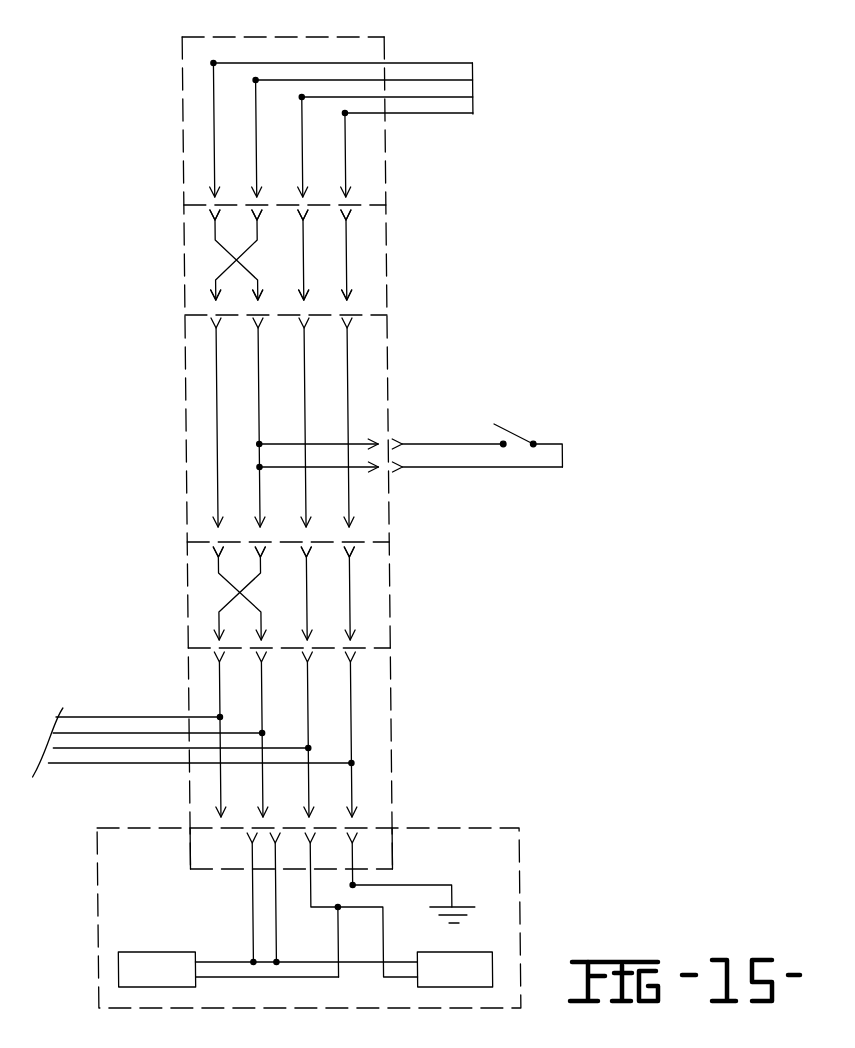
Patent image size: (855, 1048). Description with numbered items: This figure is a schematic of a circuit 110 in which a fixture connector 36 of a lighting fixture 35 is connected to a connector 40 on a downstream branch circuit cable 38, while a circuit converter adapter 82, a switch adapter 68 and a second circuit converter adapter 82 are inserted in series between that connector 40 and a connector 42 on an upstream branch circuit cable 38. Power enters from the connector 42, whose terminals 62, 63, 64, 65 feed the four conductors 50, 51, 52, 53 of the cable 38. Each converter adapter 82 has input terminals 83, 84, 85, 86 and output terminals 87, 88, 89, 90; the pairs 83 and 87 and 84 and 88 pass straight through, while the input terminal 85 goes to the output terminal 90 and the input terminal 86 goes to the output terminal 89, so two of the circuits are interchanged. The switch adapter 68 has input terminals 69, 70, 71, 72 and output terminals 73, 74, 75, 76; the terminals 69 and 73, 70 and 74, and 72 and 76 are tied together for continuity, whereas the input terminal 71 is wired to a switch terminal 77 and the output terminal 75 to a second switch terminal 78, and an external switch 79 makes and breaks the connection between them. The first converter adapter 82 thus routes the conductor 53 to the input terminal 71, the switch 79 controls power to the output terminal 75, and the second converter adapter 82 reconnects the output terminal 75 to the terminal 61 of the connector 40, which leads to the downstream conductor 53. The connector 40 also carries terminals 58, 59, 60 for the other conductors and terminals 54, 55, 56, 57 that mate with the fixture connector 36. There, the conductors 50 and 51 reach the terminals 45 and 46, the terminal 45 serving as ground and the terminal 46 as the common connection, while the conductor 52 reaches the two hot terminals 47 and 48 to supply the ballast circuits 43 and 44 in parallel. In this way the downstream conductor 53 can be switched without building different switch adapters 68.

The circuit 110 is at (174, 44).
The connector 42 is at (301, 36).
The branch circuit cable 38 is at (471, 58).
The conductor 53 is at (436, 38).
The conductor 52 is at (435, 80).
The conductor 51 is at (416, 98).
The conductor 50 is at (461, 114).
The terminal 65 is at (242, 178).
The terminal 64 is at (284, 178).
The terminal 63 is at (327, 178).
The terminal 62 is at (353, 197).
The circuit converter adapter 82 is at (184, 245).
The input terminal 86 is at (212, 213).
The input terminal 85 is at (276, 400).
The input terminal 84 is at (322, 401).
The input terminal 83 is at (353, 213).
The output terminal 90 is at (213, 299).
The output terminal 89 is at (286, 283).
The output terminal 88 is at (333, 288).
The output terminal 87 is at (353, 299).
The input terminal 72 is at (212, 323).
The input terminal 71 is at (259, 330).
The input terminal 70 is at (321, 422).
The input terminal 69 is at (366, 422).
The switch adapter 68 is at (186, 438).
The switch terminal 77 is at (375, 446).
The second switch terminal 78 is at (372, 466).
The switch 79 is at (514, 434).
The output terminal 73 is at (352, 528).
The output terminal 76 is at (214, 526).
The output terminal 75 is at (259, 526).
The output terminal 74 is at (305, 526).
The terminal 61 is at (213, 655).
The terminal 60 is at (259, 664).
The terminal 59 is at (293, 734).
The terminal 58 is at (356, 657).
The connector 40 is at (400, 700).
The terminal 57 is at (215, 817).
The terminal 56 is at (262, 815).
The terminal 55 is at (340, 797).
The terminal 54 is at (354, 816).
The lighting fixture 35 is at (497, 827).
The connector 36 is at (186, 852).
The terminal 48 is at (250, 840).
The terminal 47 is at (294, 899).
The terminal 46 is at (361, 905).
The terminal 45 is at (357, 834).
The ballast circuit 43 is at (166, 952).
The ballast circuit 44 is at (440, 952).